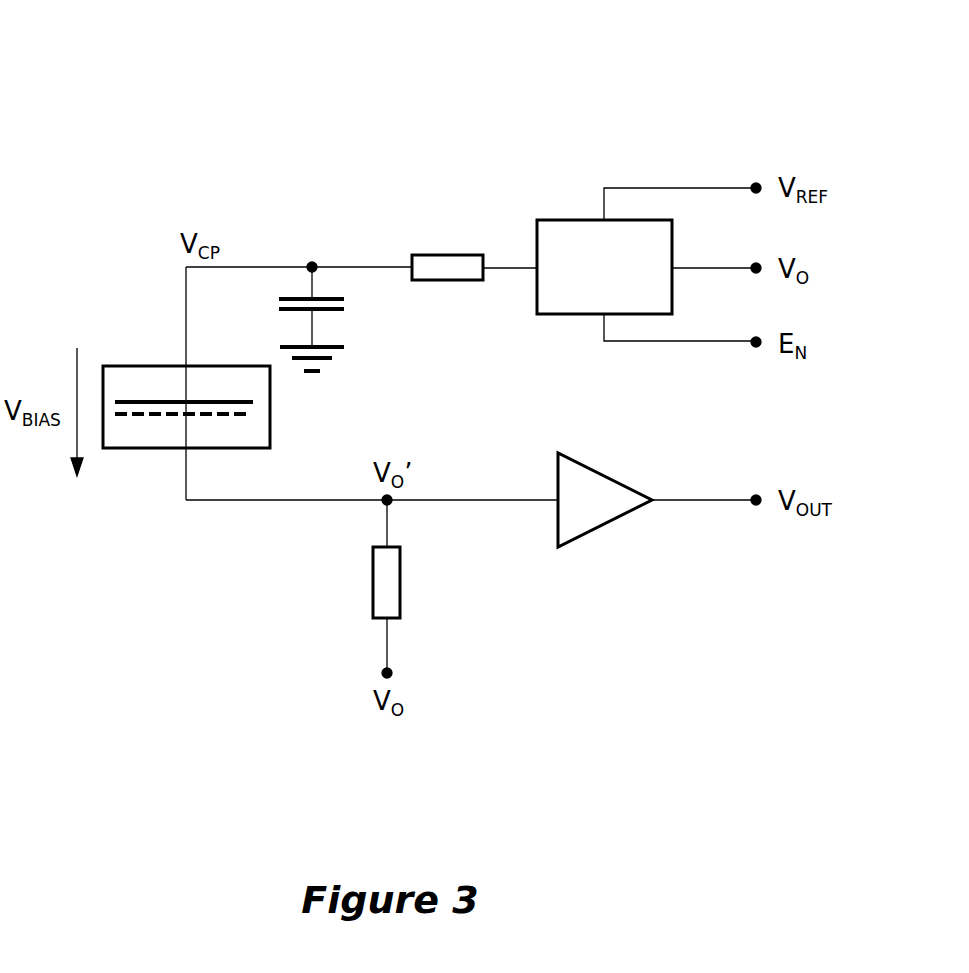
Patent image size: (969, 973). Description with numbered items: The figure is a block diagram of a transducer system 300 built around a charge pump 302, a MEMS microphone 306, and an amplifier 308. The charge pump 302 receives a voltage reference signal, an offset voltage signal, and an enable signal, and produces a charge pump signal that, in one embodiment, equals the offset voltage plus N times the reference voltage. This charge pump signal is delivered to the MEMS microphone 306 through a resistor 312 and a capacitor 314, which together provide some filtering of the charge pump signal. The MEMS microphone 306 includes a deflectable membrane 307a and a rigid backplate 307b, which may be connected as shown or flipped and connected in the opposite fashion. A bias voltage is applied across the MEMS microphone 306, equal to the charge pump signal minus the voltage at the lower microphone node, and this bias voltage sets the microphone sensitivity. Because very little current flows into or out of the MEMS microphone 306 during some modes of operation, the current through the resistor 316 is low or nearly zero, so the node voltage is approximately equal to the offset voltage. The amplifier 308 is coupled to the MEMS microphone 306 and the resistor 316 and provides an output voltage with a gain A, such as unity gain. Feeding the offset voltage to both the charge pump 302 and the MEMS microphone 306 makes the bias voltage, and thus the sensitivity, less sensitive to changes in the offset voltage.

The transducer system 300 is at (113, 110).
The charge pump 302 is at (572, 220).
The MEMS microphone 306 is at (150, 452).
The deflectable membrane 307a is at (253, 402).
The rigid backplate 307b is at (250, 414).
The amplifier 308 is at (608, 523).
The resistor 312 is at (448, 282).
The capacitor 314 is at (278, 299).
The resistor 316 is at (373, 583).